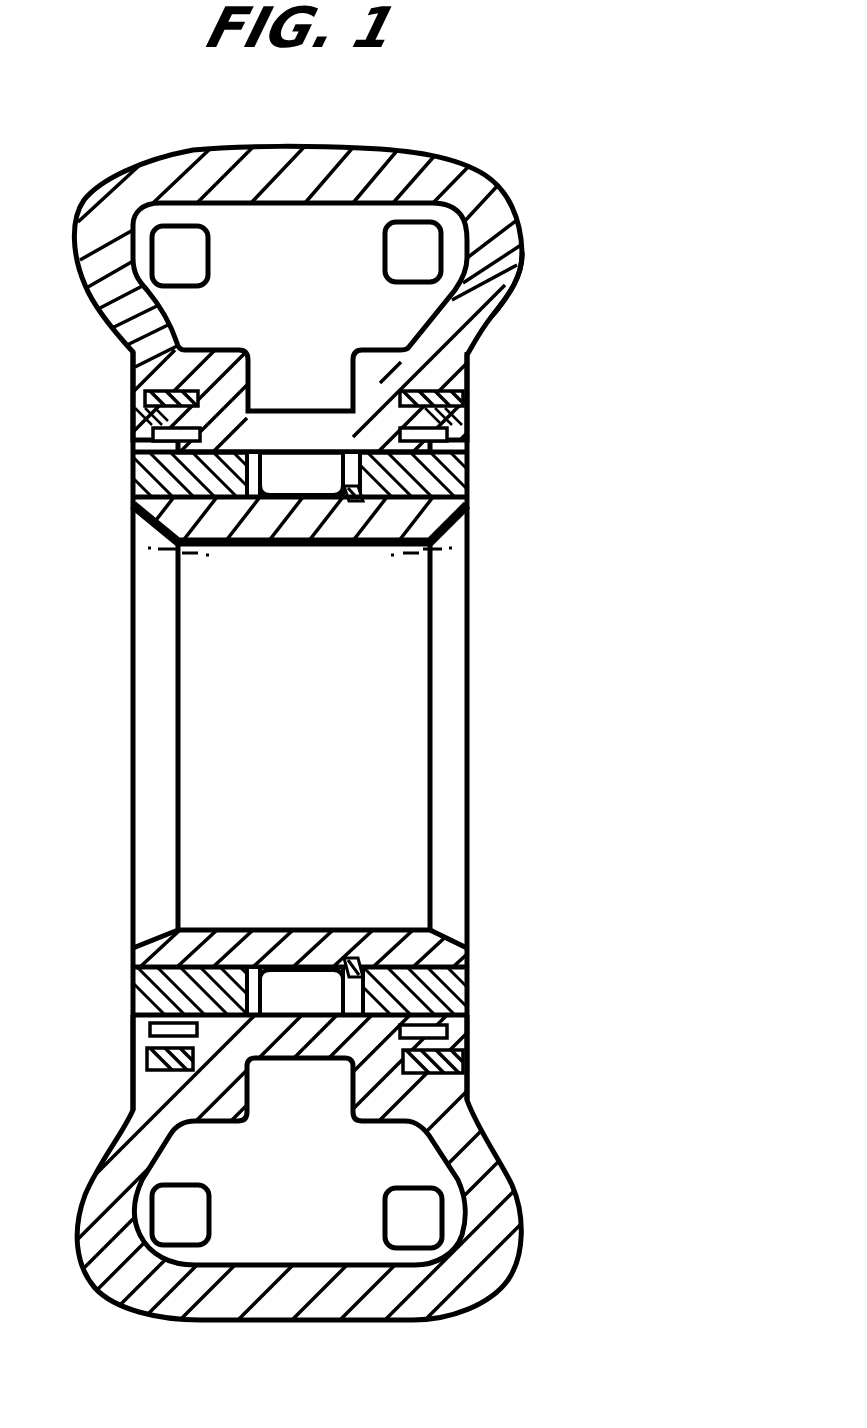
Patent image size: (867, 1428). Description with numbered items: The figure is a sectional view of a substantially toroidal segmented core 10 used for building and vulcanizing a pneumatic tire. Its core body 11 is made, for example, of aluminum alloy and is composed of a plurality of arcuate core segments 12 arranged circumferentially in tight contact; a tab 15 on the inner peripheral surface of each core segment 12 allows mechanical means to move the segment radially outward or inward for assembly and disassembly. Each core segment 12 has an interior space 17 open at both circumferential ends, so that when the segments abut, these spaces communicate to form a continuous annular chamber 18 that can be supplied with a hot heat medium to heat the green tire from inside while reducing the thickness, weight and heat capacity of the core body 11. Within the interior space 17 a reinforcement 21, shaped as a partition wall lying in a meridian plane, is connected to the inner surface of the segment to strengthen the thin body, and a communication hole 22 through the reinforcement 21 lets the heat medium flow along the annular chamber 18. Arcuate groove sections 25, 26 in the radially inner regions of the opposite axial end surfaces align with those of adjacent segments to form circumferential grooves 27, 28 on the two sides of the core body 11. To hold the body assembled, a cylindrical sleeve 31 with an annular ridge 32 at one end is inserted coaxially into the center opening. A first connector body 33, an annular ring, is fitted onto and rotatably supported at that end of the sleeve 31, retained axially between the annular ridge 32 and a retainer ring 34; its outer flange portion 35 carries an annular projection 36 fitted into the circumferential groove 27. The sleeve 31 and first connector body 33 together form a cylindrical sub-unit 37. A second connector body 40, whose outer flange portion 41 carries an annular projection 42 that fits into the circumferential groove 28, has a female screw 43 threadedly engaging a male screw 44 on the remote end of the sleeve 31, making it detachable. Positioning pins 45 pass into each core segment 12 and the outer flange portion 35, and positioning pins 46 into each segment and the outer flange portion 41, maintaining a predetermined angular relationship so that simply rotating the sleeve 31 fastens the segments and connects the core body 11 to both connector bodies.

The toroidal core 10 is at (122, 150).
The core body 11 is at (510, 180).
The core segment 12 is at (524, 256).
The tab 15 is at (295, 474).
The interior space 17 is at (317, 206).
The annular chamber 18 is at (262, 240).
The reinforcement 21 is at (430, 302).
The communication hole 22 is at (185, 268).
The arcuate groove section 25 is at (467, 402).
The arcuate groove section 26 is at (170, 406).
The circumferential groove 27 is at (463, 417).
The circumferential groove 28 is at (170, 430).
The cylindrical sleeve 31 is at (350, 518).
The annular ridge 32 is at (462, 497).
The first connector body 33 is at (468, 1000).
The retainer ring 34 is at (355, 955).
The outer flange portion 35 is at (468, 1020).
The annular projection 36 is at (368, 1080).
The sub-unit 37 is at (478, 955).
The second connector body 40 is at (140, 990).
The outer flange portion 41 is at (140, 1015).
The annular projection 42 is at (140, 1098).
The female screw 43 is at (134, 948).
The male screw 44 is at (212, 928).
The positioning pin 45 is at (468, 1052).
The positioning pin 46 is at (140, 1045).